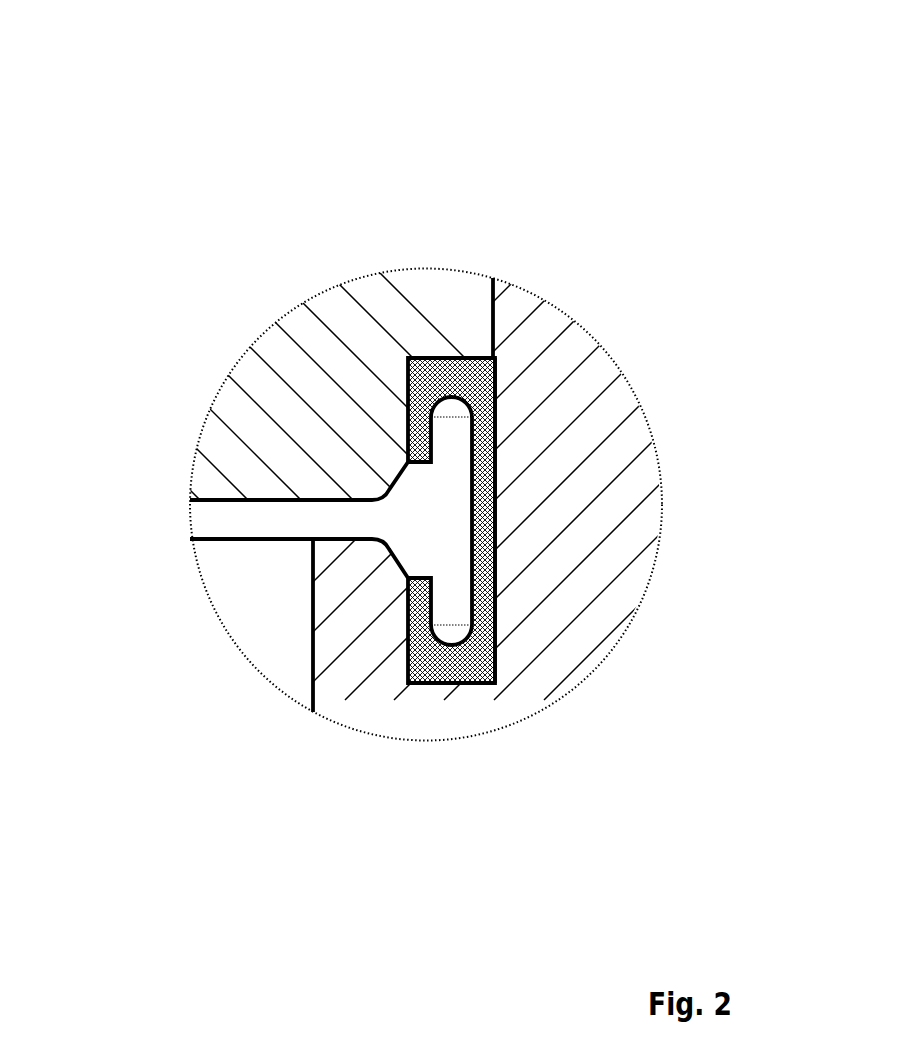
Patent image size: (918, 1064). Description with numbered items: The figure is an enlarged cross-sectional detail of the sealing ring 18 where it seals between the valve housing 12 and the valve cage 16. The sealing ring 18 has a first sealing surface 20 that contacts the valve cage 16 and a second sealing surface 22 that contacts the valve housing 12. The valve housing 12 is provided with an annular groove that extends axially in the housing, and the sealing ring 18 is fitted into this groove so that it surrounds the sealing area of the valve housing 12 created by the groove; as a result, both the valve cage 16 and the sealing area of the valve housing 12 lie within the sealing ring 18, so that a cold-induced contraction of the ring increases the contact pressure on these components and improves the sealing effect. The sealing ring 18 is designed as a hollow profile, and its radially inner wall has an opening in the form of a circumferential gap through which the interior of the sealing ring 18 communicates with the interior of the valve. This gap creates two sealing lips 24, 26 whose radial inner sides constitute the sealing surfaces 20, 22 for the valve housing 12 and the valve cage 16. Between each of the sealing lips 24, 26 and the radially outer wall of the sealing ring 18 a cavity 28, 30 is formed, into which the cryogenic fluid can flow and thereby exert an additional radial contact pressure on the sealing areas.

The valve housing 12 is at (593, 513).
The valve cage 16 is at (263, 382).
The sealing ring 18 is at (480, 345).
The first sealing surface 20 is at (407, 405).
The second sealing surface 22 is at (410, 684).
The sealing lip 24 is at (453, 433).
The sealing lip 26 is at (460, 684).
The cavity 28 is at (495, 380).
The cavity 30 is at (458, 610).